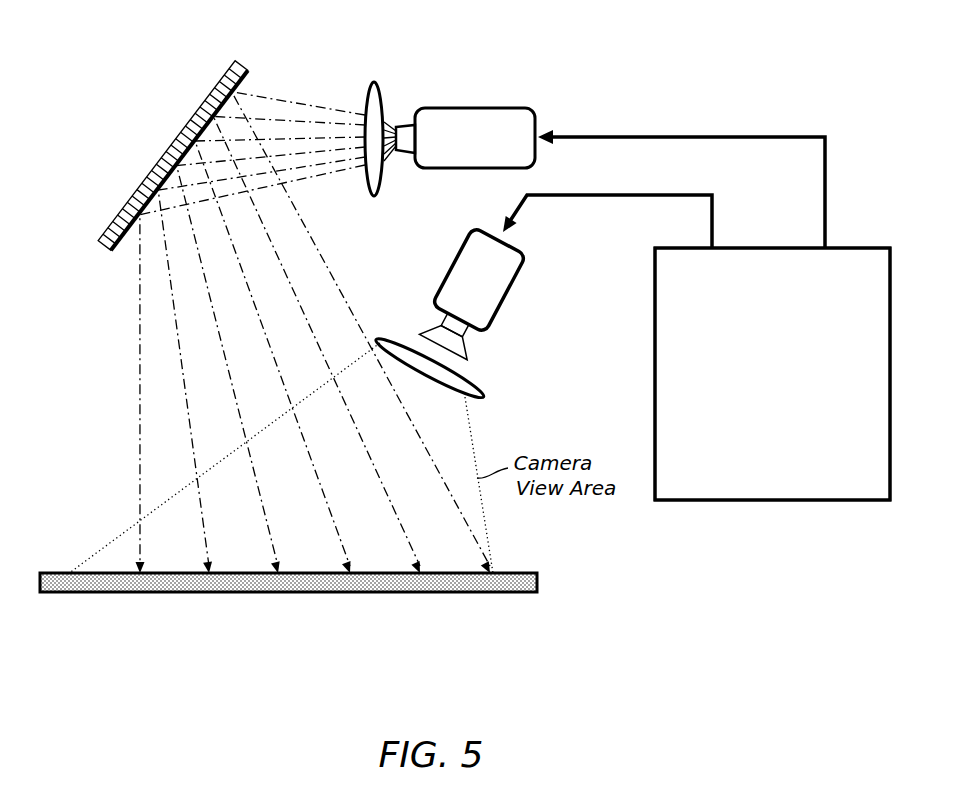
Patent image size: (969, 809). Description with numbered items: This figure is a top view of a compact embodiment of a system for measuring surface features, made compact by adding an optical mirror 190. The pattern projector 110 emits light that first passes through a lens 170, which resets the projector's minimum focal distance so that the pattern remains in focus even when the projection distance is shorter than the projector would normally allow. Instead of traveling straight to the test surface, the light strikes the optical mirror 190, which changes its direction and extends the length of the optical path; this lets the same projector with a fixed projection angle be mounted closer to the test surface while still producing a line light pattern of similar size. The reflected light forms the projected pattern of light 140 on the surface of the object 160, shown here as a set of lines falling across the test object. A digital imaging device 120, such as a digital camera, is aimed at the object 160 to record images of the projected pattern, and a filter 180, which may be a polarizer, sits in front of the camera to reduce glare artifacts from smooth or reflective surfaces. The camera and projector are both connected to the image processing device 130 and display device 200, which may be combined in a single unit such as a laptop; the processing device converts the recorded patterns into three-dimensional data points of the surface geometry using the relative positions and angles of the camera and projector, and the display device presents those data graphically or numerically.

The pattern projector 110 is at (480, 107).
The digital imaging device 120 is at (513, 285).
The image processing device 130 is at (772, 374).
The pattern of light 140 is at (140, 425).
The object 160 is at (317, 596).
The lens 170 is at (373, 80).
The filter 180 is at (483, 394).
The optical mirror 190 is at (171, 145).
The display device 200 is at (772, 374).